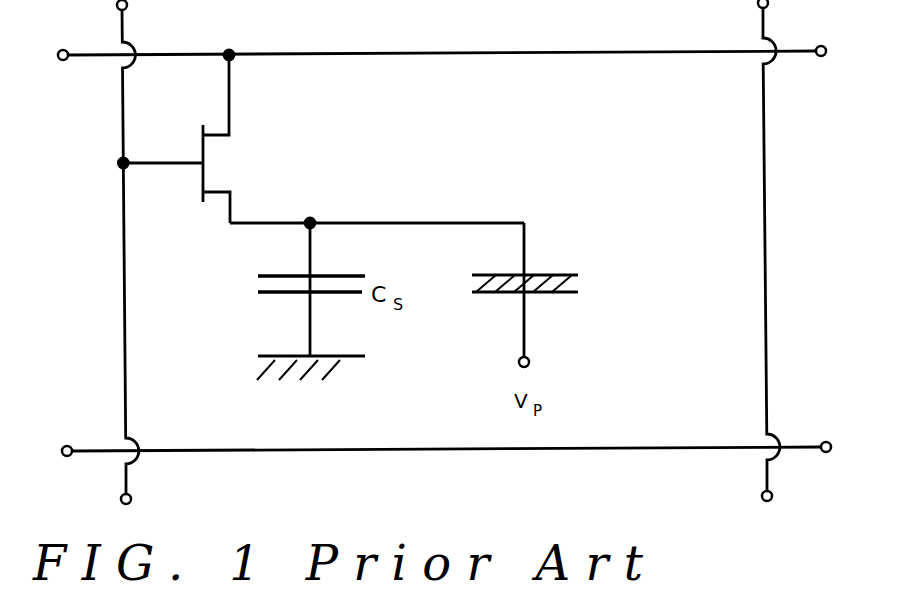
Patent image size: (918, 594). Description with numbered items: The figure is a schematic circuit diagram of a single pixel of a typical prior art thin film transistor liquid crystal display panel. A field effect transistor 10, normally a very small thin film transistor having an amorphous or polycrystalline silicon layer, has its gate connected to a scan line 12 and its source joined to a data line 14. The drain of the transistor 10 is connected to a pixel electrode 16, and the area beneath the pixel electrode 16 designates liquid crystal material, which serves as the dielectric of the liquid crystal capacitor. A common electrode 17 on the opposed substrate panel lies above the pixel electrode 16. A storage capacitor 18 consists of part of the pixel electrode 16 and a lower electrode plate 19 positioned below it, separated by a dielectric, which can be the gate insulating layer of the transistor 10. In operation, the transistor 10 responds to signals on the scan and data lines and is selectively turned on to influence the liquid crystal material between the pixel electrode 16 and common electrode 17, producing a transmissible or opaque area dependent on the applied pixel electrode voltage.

The field effect transistor 10 is at (213, 162).
The scan line 12 is at (124, 278).
The data line 14 is at (395, 53).
The pixel electrode 16 is at (282, 275).
The common electrode 17 is at (557, 292).
The storage capacitor 18 is at (273, 286).
The lower electrode plate 19 is at (290, 296).